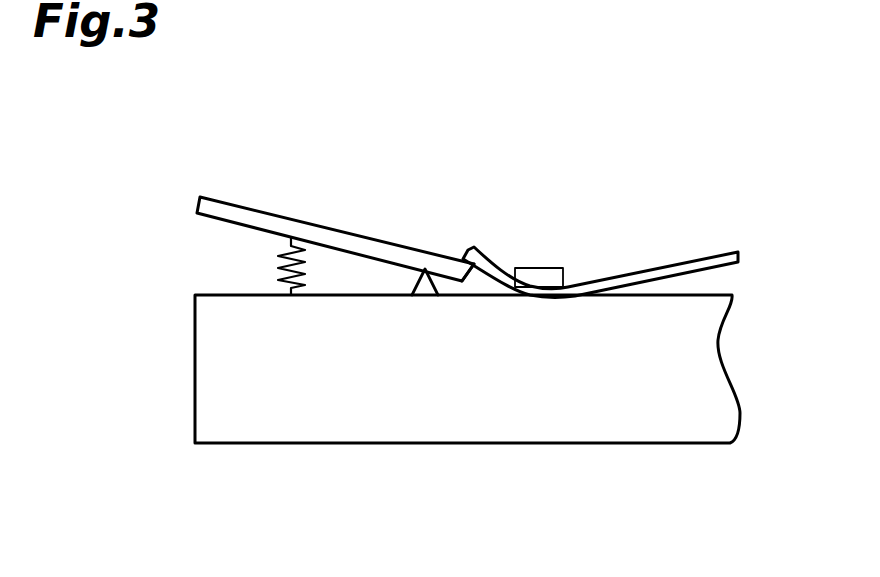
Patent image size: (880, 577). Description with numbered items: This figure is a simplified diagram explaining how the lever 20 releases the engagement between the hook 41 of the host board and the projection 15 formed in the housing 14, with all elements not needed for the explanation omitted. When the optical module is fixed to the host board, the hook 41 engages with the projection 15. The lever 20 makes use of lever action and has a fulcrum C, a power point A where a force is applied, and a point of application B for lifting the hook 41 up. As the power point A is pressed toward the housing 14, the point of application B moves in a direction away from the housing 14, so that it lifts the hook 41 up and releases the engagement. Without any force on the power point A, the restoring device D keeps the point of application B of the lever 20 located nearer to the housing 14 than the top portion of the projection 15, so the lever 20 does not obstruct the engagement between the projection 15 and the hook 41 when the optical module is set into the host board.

The housing 14 is at (628, 432).
The lever 20 is at (380, 178).
The power point A is at (222, 200).
The point of application B is at (466, 268).
The fulcrum C is at (423, 290).
The restoring device D is at (278, 266).
The projection 15 is at (548, 272).
The hook 41 is at (715, 260).